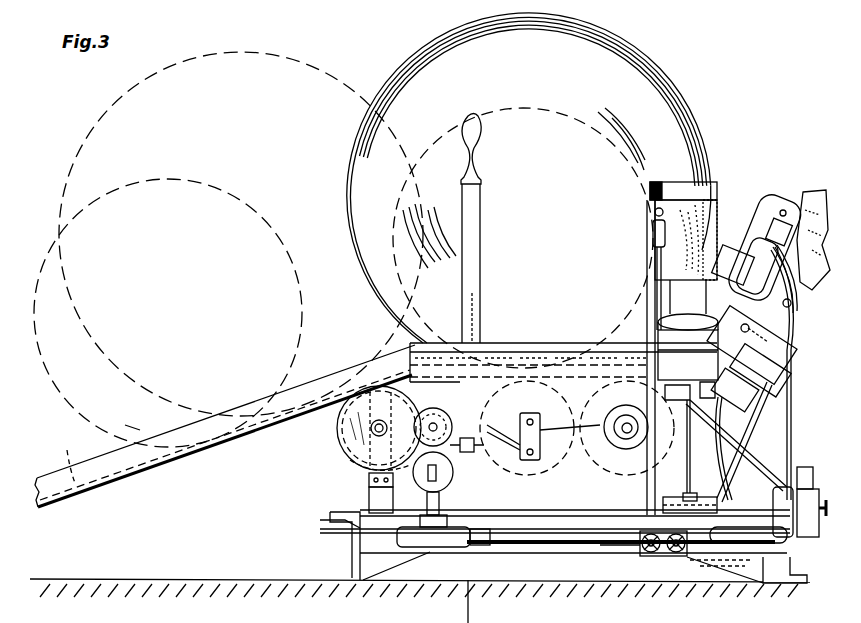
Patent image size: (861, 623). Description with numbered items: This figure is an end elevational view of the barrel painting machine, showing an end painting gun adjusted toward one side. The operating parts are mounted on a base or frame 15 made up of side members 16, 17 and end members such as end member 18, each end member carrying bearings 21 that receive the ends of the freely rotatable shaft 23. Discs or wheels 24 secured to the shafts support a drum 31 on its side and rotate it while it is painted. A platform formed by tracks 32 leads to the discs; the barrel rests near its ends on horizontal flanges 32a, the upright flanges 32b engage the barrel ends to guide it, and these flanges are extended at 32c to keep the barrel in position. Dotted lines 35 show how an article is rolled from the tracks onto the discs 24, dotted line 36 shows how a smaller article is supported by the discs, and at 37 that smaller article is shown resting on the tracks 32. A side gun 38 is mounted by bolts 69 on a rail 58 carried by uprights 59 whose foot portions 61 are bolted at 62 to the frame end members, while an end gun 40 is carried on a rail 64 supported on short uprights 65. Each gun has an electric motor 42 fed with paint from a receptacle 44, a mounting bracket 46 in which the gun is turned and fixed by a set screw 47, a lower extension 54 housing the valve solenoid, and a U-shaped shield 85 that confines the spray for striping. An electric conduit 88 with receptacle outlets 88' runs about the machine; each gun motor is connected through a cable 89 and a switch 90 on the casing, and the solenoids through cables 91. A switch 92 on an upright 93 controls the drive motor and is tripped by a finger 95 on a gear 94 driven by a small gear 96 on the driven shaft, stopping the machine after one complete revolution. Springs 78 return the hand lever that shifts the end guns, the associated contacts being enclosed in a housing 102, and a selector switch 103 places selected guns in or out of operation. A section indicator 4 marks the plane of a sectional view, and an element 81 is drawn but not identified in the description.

The section line 4 is at (480, 316).
The base or frame 15 is at (335, 560).
The side member 16 is at (766, 572).
The side member 17 is at (345, 520).
The end member 18 is at (568, 540).
The bearing 21 is at (622, 440).
The shaft 23 is at (570, 437).
The disc or wheel 24 is at (500, 405).
The drum 31 is at (615, 38).
The track 32 is at (187, 416).
The horizontal flange 32a is at (61, 456).
The upright flange 32b is at (126, 445).
The flange extension 32c is at (512, 322).
The dotted lines 35 is at (300, 60).
The dotted line 36 is at (548, 112).
The smaller article 37 is at (205, 182).
The paint gun 38 is at (785, 193).
The end paint gun 40 is at (653, 270).
The electric motor 42 is at (706, 170).
The paint container 44 is at (812, 190).
The mounting bracket 46 is at (775, 338).
The set screw 47 is at (792, 306).
The gun extension 54 is at (714, 448).
The rail 58 is at (785, 364).
The upright 59 is at (752, 412).
The foot portion 61 is at (690, 498).
The bolt 62 is at (697, 480).
The supporting rail 64 is at (512, 362).
The short upright 65 is at (436, 412).
The bolt 69 is at (757, 390).
The spring 78 is at (541, 428).
The cylinder 81 is at (494, 548).
The U-shaped shield 85 is at (732, 255).
The electric conduit 88 is at (620, 560).
The receptacle outlet 88' is at (663, 557).
The cable 89 is at (793, 380).
The switch 90 is at (652, 240).
The cable 91 is at (755, 472).
The switch 92 is at (368, 478).
The upright 93 is at (372, 493).
The gear 94 is at (338, 425).
The tripping finger 95 is at (356, 450).
The small gear 96 is at (463, 451).
The housing 102 is at (452, 495).
The selector switch 103 is at (805, 530).